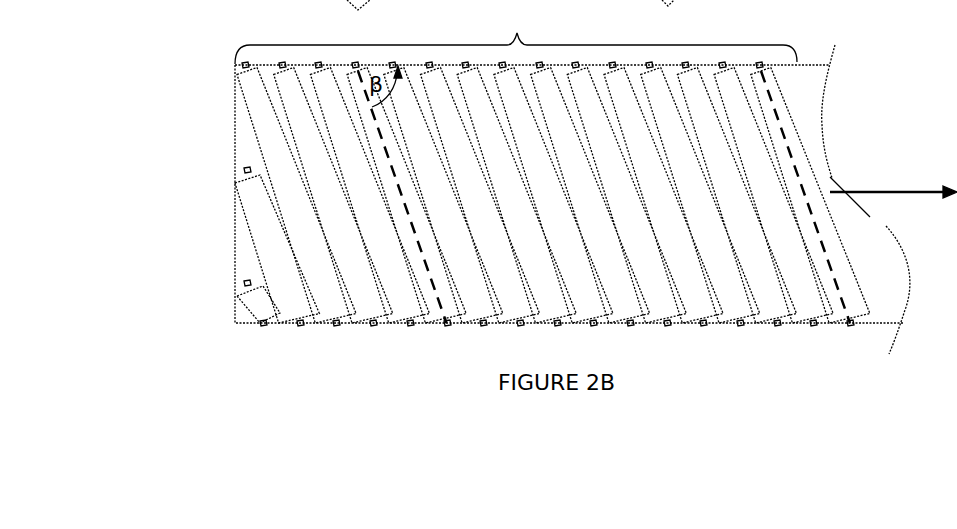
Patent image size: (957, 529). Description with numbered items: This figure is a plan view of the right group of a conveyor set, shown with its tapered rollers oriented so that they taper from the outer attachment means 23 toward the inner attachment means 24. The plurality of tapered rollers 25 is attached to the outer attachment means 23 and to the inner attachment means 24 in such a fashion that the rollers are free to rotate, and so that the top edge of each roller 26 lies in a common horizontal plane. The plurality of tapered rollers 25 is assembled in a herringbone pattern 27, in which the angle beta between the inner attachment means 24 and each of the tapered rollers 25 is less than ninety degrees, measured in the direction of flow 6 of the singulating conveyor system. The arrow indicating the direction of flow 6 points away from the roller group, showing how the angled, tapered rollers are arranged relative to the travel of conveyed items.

The outer attachment means 23 is at (259, 328).
The inner attachment means 24 is at (270, 62).
The plurality of tapered rollers 25 is at (552, 194).
The top edge of each roller 26 is at (786, 118).
The herringbone pattern 27 is at (516, 38).
The direction of flow 6 is at (893, 200).